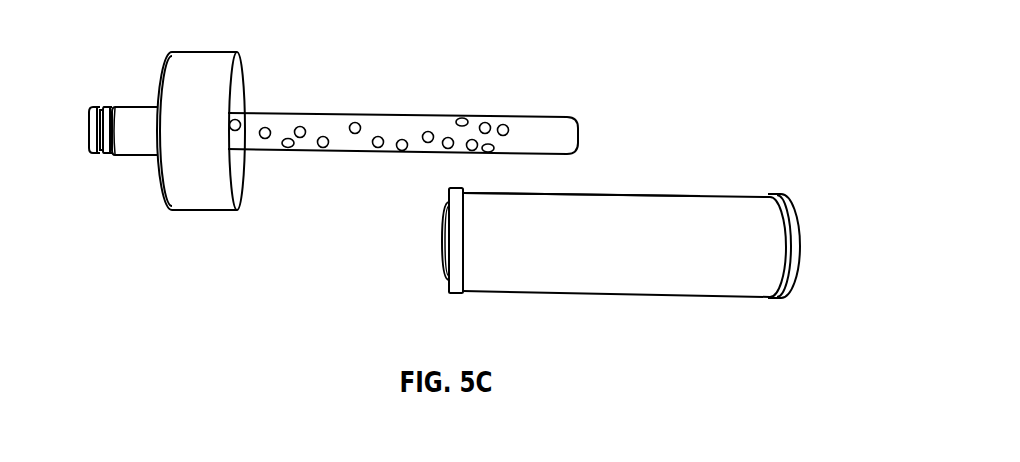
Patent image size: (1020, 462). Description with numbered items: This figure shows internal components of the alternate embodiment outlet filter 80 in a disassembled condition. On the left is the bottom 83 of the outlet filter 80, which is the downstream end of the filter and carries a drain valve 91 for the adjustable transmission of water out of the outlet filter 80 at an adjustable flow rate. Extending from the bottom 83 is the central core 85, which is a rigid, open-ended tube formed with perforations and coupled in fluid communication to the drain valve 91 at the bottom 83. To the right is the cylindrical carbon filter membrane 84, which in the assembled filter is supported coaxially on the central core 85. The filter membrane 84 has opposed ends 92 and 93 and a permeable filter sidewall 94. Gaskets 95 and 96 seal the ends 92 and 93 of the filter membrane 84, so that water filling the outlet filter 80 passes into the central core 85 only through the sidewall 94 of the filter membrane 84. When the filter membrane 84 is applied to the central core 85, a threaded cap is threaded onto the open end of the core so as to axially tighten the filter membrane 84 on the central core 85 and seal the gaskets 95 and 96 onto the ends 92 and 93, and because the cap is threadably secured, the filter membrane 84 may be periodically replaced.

The outlet filter 80 is at (728, 157).
The bottom 83 is at (132, 147).
The cylindrical carbon filter membrane 84 is at (634, 270).
The central core 85 is at (412, 125).
The drain valve 91 is at (88, 128).
The end 92 is at (802, 248).
The end 93 is at (442, 242).
The permeable filter sidewall 94 is at (633, 195).
The gasket 95 is at (787, 276).
The gasket 96 is at (446, 283).